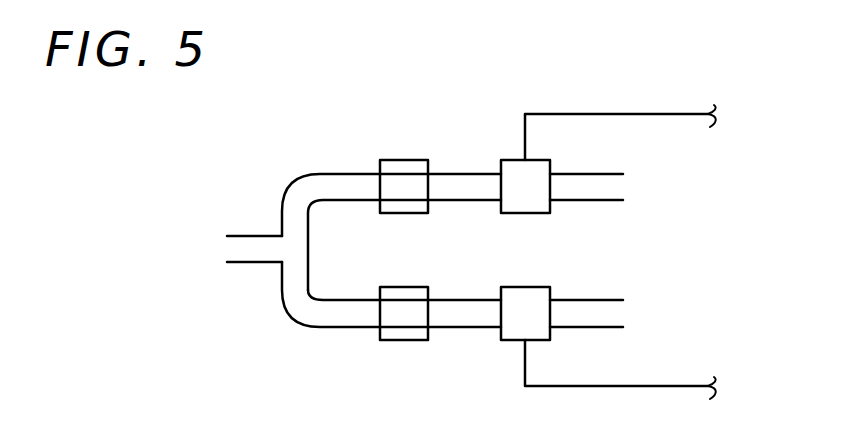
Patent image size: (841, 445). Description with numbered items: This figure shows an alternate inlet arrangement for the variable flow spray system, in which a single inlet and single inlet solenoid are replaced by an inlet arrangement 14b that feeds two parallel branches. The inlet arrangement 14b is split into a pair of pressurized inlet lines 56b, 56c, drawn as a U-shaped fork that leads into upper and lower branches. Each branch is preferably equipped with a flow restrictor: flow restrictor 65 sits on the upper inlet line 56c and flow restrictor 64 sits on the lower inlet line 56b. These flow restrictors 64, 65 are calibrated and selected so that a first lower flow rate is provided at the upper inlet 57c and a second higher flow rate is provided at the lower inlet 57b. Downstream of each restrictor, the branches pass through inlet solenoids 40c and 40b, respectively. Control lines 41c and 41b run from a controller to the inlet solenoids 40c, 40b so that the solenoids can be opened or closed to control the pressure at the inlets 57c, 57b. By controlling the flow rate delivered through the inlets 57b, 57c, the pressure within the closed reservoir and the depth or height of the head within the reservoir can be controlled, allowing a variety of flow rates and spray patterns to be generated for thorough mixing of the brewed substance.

The inlet arrangement 14b is at (293, 245).
The pressurized inlet line 56c is at (307, 192).
The pressurized inlet line 56b is at (302, 302).
The flow restrictor 65 is at (405, 160).
The flow restrictor 64 is at (403, 343).
The inlet solenoid 40c is at (518, 160).
The inlet solenoid 40b is at (522, 327).
The control line 41c is at (638, 115).
The control line 41b is at (660, 386).
The inlet 57c is at (612, 184).
The inlet 57b is at (612, 312).